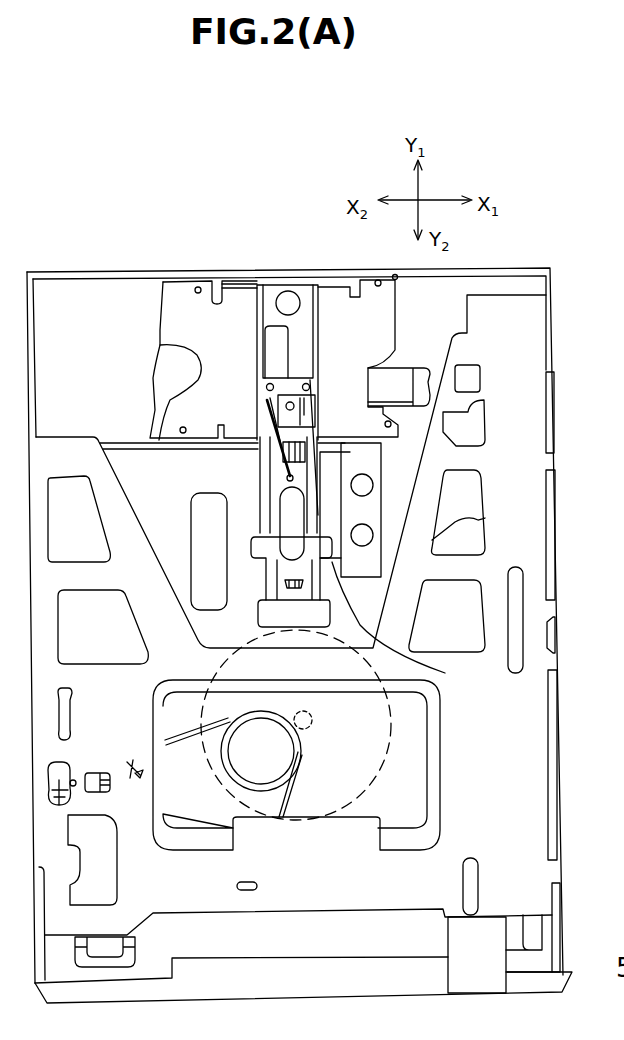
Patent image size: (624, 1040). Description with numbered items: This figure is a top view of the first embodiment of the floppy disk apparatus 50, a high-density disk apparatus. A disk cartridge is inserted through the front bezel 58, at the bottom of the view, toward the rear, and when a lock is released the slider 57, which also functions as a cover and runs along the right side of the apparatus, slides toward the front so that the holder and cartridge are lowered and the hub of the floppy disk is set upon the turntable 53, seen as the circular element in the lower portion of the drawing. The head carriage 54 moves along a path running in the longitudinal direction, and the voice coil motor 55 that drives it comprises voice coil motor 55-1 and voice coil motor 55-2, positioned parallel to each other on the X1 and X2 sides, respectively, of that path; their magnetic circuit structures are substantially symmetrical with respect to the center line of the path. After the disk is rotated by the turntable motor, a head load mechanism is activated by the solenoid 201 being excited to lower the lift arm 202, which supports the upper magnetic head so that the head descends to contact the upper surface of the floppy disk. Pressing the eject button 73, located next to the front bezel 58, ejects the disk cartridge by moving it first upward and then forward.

The floppy disk apparatus 50 is at (578, 182).
The turntable 53 is at (296, 740).
The head carriage 54 is at (255, 478).
The voice coil motor 55 is at (338, 219).
The voice coil motor 55-1 is at (328, 300).
The voice coil motor 55-2 is at (237, 292).
The slider 57 is at (536, 730).
The front bezel 58 is at (345, 986).
The eject button 73 is at (490, 986).
The solenoid 201 is at (398, 383).
The lift arm 202 is at (417, 632).